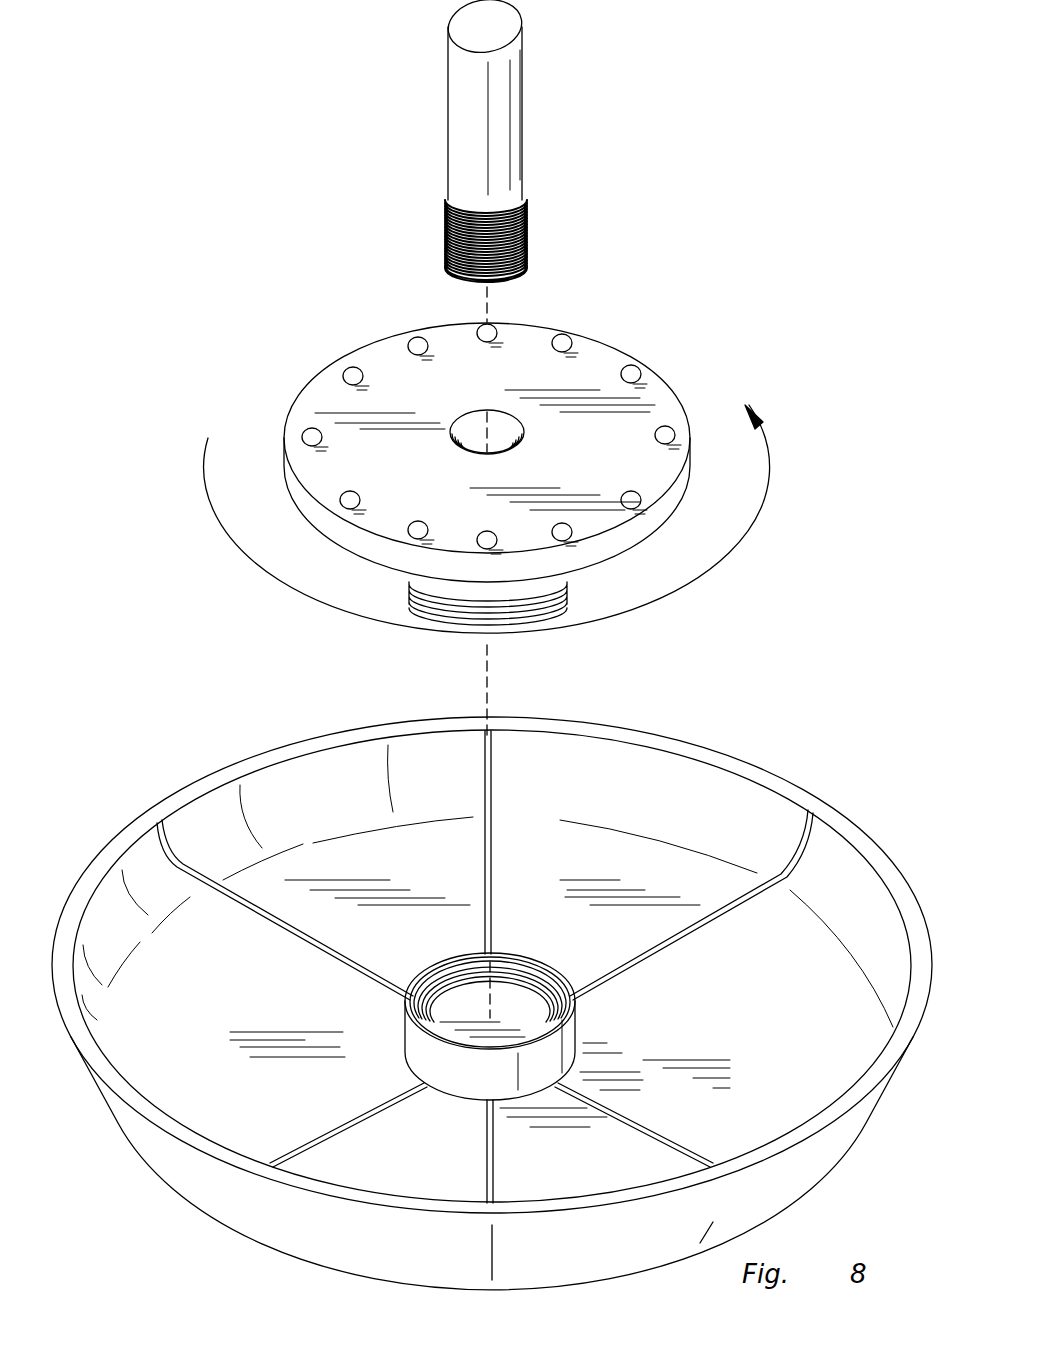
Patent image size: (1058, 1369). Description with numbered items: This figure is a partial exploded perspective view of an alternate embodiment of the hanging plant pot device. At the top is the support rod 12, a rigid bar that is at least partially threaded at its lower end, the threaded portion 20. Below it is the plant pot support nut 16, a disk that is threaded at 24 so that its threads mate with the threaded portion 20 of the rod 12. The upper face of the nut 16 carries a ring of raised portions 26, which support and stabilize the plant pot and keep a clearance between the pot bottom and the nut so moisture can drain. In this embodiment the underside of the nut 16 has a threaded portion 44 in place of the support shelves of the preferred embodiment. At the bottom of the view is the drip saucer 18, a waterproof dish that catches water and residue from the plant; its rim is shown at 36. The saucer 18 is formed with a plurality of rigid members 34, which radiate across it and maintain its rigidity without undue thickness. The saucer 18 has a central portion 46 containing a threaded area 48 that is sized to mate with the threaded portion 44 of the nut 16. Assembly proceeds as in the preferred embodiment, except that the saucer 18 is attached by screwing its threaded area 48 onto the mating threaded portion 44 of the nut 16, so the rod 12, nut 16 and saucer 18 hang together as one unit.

The support rod 12 is at (462, 88).
The threaded portion 20 is at (523, 225).
The plant pot support nut 16 is at (412, 467).
The raised portions 26 is at (412, 340).
The threads 24 is at (522, 426).
The threaded portion 44 is at (414, 586).
The drip saucer 18 is at (650, 787).
The rim 36 is at (697, 748).
The rigid members 34 is at (488, 1122).
The central portion 46 is at (430, 1055).
The threaded area 48 is at (515, 958).